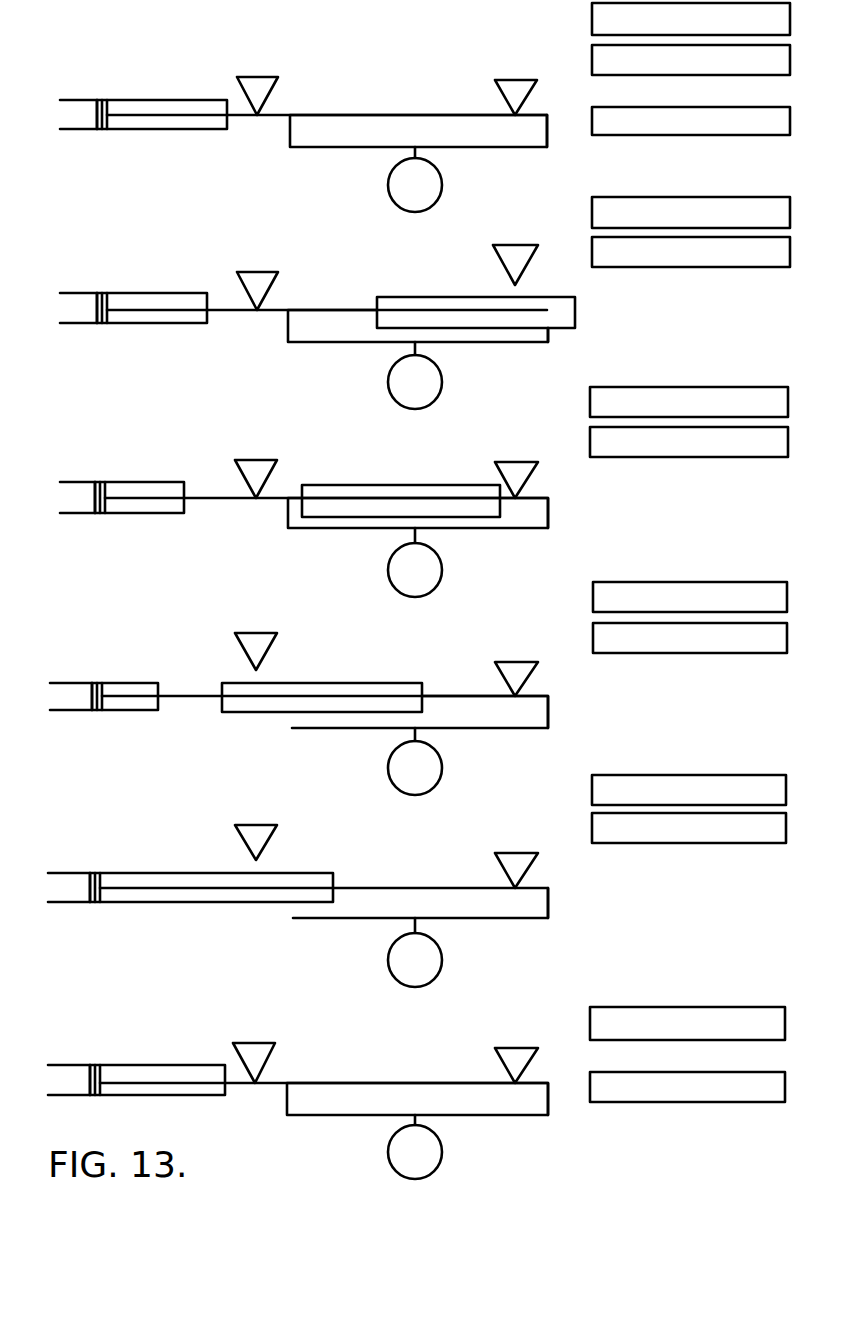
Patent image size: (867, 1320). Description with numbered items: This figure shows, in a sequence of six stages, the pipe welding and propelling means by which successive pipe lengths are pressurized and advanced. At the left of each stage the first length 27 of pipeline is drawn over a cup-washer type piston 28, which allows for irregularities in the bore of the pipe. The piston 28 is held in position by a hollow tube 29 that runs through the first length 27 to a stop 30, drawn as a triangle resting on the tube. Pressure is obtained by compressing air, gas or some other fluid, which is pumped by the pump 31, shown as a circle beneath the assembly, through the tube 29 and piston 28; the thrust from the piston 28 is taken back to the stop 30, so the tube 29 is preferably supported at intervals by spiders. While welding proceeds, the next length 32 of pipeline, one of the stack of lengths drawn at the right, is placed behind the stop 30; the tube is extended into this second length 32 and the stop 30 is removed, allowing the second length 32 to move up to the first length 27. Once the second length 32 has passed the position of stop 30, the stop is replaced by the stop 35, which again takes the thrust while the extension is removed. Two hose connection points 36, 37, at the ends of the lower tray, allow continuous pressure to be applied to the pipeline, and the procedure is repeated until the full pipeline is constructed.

The first length of pipeline 27 is at (68, 104).
The cup-washer type piston 28 is at (107, 105).
The hollow tube 29 is at (166, 113).
The stop 30 is at (268, 86).
The pump 31 is at (435, 193).
The next length of pipeline 32 is at (645, 120).
The stop 35 is at (498, 88).
The hose connection point 36 is at (288, 122).
The hose connection point 37 is at (548, 113).